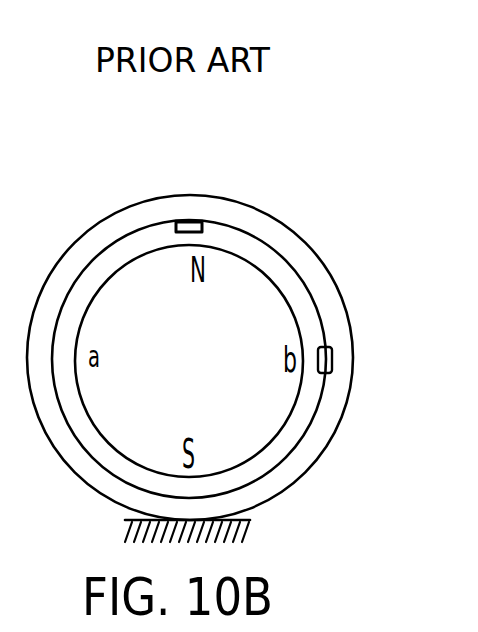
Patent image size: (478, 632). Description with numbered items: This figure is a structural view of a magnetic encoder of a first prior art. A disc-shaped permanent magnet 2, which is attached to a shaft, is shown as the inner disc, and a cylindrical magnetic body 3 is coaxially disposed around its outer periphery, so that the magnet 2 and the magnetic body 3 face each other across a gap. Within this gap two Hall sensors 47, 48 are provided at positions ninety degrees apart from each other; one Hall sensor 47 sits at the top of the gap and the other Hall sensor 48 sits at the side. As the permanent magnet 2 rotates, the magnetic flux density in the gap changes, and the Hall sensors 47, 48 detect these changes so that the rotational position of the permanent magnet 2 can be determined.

The permanent magnet 2 is at (252, 261).
The magnetic body 3 is at (342, 293).
The Hall sensor 47 is at (195, 222).
The Hall sensor 48 is at (333, 360).